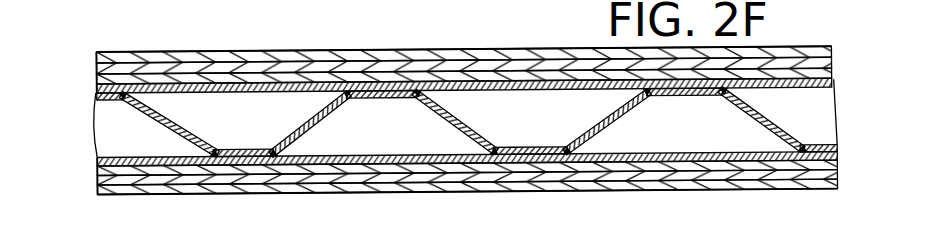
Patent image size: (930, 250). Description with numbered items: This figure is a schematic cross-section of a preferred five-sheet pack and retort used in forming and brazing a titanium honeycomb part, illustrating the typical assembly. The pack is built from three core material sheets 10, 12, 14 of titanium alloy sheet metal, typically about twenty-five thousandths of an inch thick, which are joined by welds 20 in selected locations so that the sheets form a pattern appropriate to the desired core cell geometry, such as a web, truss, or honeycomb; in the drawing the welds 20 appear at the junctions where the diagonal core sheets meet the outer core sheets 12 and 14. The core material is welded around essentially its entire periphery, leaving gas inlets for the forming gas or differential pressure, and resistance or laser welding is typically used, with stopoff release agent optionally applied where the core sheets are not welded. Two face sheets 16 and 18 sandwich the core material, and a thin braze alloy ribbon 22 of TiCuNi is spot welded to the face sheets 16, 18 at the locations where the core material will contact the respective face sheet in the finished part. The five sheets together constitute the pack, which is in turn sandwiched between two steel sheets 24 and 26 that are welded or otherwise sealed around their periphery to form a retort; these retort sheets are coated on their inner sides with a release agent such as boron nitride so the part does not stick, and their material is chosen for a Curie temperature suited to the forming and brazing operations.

The core material sheet 10 is at (843, 143).
The core material sheet 12 is at (838, 151).
The core material sheet 14 is at (837, 84).
The face sheet 16 is at (833, 63).
The face sheet 18 is at (838, 173).
The weld 20 is at (120, 98).
The braze alloy ribbon 22 is at (96, 80).
The steel sheet 24 is at (448, 48).
The steel sheet 26 is at (580, 192).